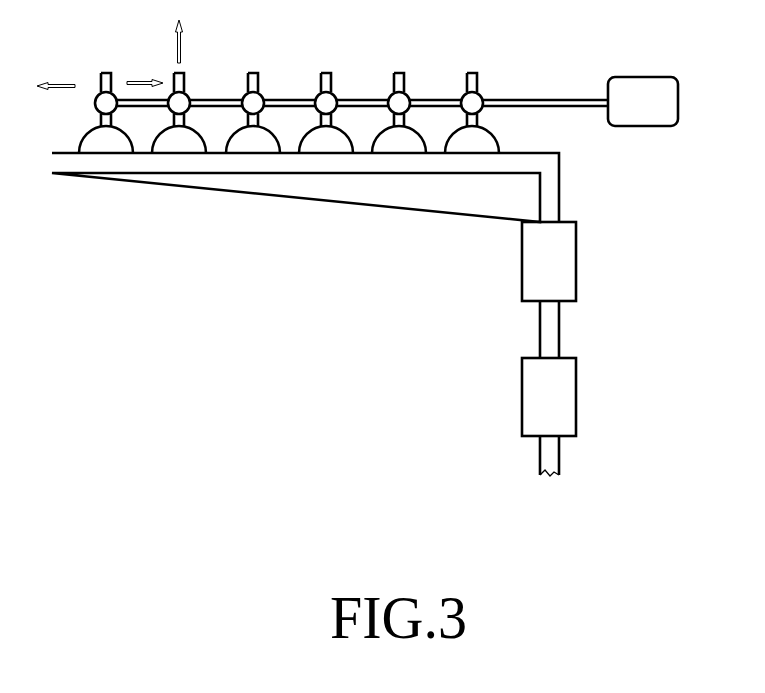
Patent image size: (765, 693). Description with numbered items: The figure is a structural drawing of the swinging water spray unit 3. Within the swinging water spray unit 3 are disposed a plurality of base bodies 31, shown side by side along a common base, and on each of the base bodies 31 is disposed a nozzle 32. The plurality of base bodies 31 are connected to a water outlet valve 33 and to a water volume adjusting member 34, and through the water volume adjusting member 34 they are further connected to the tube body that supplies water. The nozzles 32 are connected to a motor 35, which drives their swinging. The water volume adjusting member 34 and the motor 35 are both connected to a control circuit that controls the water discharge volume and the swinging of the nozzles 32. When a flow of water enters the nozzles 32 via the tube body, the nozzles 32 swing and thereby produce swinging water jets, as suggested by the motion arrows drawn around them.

The swinging water spray unit 3 is at (350, 190).
The base body 31 is at (247, 145).
The nozzle 32 is at (254, 73).
The water outlet valve 33 is at (567, 262).
The water volume adjusting member 34 is at (532, 382).
The motor 35 is at (638, 83).